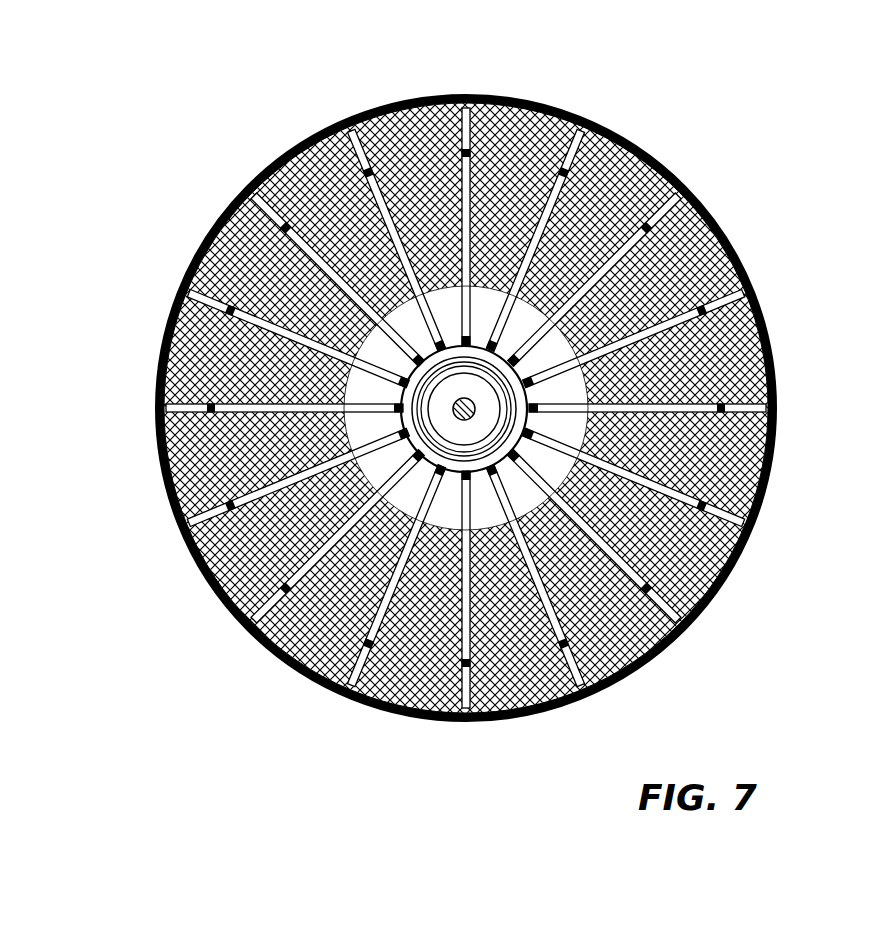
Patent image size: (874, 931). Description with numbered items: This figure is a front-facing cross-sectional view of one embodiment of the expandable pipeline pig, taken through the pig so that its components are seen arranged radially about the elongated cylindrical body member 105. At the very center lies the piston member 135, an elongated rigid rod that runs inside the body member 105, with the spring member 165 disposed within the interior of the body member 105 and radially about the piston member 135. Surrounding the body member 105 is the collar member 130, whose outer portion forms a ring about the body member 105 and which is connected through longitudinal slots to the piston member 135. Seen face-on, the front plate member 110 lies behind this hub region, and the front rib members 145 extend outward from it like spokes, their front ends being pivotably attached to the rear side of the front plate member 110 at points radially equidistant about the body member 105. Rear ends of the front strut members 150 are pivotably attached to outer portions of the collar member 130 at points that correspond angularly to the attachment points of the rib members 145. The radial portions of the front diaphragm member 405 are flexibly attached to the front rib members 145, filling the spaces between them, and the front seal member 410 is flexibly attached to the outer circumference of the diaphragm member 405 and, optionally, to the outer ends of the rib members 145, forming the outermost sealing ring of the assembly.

The elongated cylindrical body member 105 is at (473, 413).
The front-plate member 110 is at (363, 428).
The collar member 130 is at (483, 470).
The piston member 135 is at (513, 453).
The front rib members 145 is at (453, 93).
The front strut members 150 is at (740, 257).
The spring member 165 is at (503, 403).
The front diaphragm member 405 is at (573, 107).
The front seal member 410 is at (767, 320).